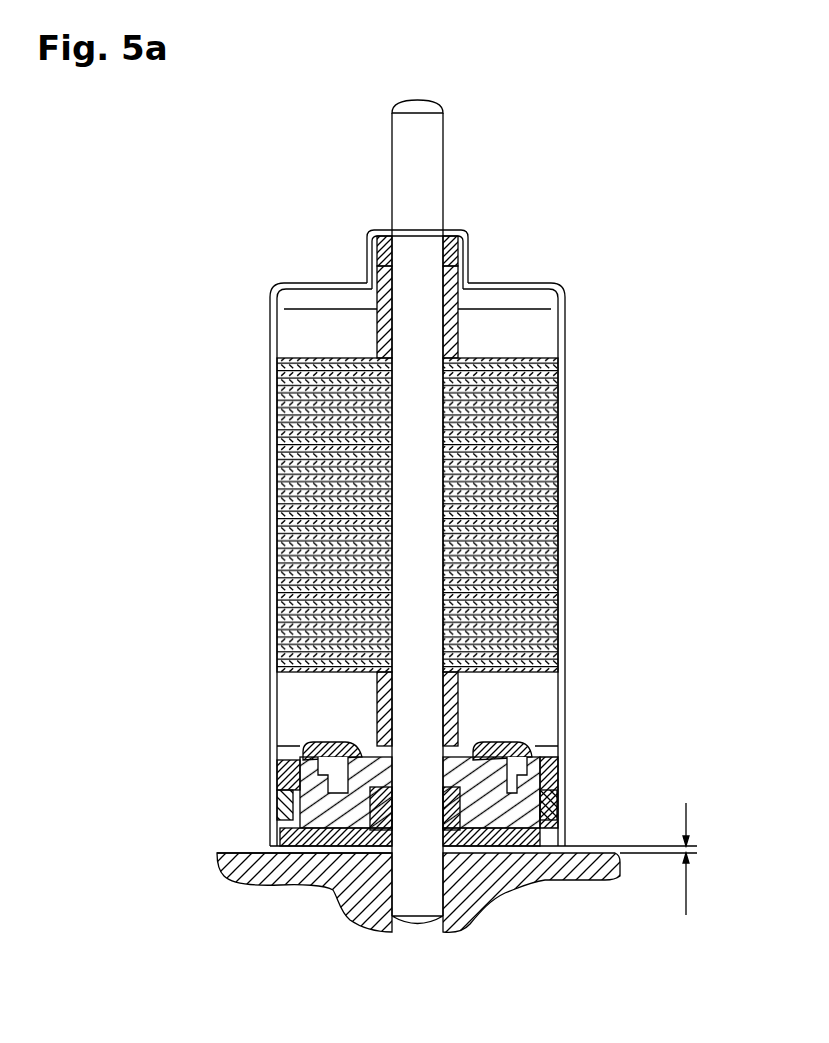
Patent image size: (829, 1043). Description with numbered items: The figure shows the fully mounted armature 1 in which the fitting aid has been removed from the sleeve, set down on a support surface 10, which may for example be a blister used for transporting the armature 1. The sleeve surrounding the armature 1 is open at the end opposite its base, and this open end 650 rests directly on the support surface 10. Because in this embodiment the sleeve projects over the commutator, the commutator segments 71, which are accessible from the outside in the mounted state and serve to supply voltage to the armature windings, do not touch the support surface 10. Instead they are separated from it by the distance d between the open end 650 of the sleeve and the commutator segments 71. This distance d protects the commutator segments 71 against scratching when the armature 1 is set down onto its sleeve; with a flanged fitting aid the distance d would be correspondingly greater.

The armature 1 is at (652, 231).
The support surface 10 is at (248, 847).
The open end 650 is at (263, 857).
The commutator segments 71 is at (330, 848).
The distance d is at (631, 859).